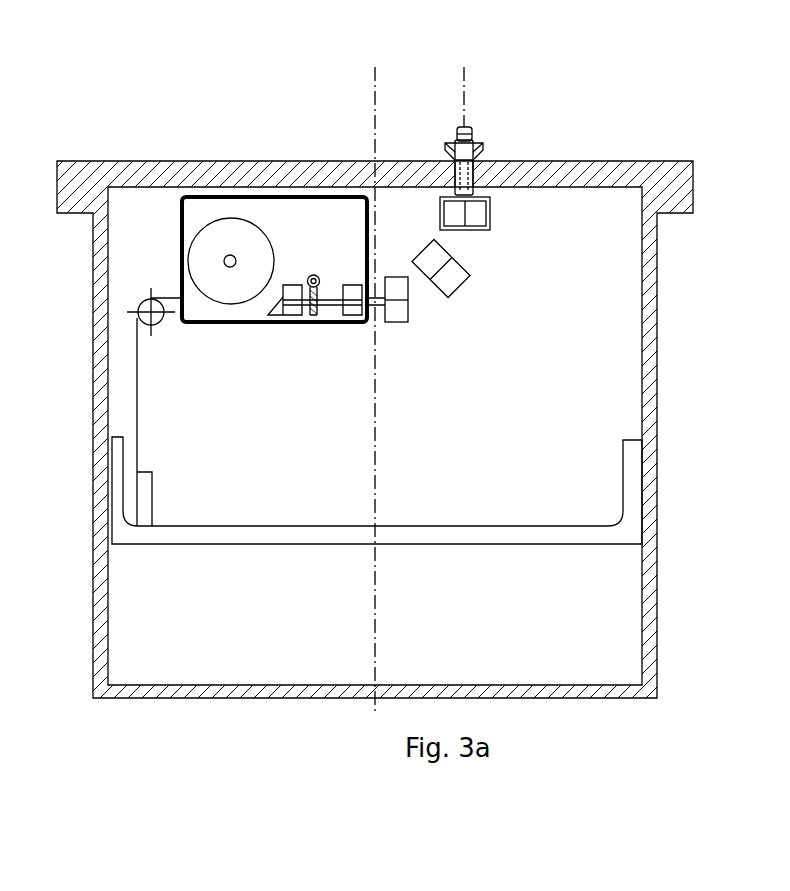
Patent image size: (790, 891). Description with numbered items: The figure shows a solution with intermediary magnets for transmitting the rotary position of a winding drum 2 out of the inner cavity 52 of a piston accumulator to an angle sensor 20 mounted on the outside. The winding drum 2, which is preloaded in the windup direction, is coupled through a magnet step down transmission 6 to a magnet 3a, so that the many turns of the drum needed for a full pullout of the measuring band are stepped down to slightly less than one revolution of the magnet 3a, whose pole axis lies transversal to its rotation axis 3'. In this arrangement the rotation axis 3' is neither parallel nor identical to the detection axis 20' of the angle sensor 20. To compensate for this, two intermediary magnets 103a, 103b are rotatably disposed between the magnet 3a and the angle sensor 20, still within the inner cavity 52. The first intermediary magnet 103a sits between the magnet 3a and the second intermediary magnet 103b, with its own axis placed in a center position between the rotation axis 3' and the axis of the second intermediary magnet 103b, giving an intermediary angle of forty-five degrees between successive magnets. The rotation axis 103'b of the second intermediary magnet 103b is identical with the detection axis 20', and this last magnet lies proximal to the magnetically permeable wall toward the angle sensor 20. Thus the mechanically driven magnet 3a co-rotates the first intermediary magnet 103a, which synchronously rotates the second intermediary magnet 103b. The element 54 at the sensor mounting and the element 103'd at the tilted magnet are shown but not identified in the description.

The winding drum 2 is at (231, 261).
The rotation axis 3' is at (283, 278).
The magnet 3a is at (403, 324).
The magnet step down transmission 6 is at (143, 297).
The angle sensor 20 is at (497, 165).
The detection axis 20' is at (444, 121).
The inner cavity 52 is at (377, 490).
The nut 54 is at (480, 138).
The first intermediary magnet 103a is at (466, 288).
The second intermediary magnet 103b is at (490, 223).
The rotation axis 103'b is at (493, 236).
The magnet 103'd is at (459, 284).